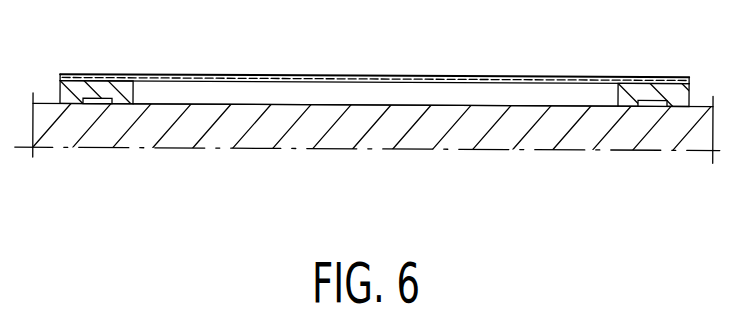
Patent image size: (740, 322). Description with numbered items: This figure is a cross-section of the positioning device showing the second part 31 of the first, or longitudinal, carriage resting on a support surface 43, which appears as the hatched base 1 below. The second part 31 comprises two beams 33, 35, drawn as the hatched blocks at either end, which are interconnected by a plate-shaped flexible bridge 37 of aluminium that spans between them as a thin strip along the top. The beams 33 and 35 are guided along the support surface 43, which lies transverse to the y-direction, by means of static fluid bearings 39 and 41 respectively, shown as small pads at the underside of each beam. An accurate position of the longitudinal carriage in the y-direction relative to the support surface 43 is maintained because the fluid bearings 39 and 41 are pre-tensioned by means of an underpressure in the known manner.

The substrate 1 is at (504, 131).
The second part 31 is at (375, 64).
The beam 33 is at (74, 88).
The beam 35 is at (675, 89).
The plate-shaped flexible bridge 37 is at (308, 74).
The static fluid bearing 39 is at (101, 98).
The static fluid bearing 41 is at (652, 101).
The support surface 43 is at (413, 103).